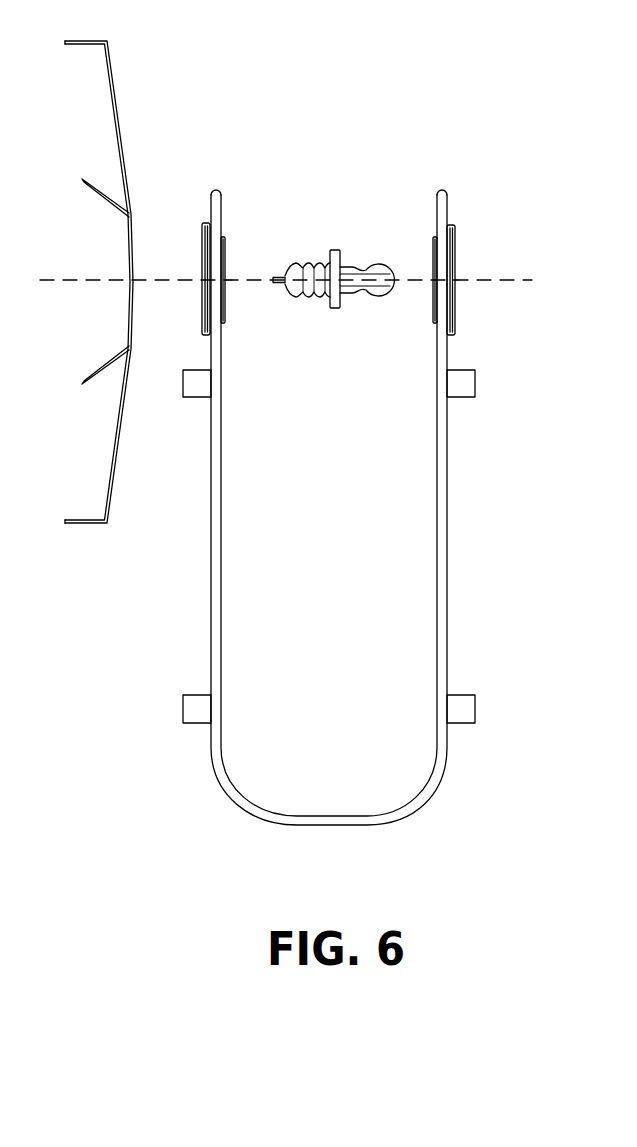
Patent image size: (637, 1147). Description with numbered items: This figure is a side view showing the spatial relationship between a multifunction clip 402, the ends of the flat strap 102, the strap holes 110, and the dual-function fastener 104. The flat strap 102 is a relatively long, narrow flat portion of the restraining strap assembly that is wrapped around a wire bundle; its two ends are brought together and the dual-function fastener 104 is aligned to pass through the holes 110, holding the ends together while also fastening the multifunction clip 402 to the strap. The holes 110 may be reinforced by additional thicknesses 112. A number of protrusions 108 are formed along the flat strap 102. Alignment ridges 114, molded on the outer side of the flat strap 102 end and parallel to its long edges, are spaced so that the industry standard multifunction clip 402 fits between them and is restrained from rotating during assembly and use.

The flat portion 102 is at (210, 647).
The dual-function fastener 104 is at (320, 240).
The protrusions 108 is at (193, 403).
The holes 110 is at (228, 284).
The reinforcement 112 is at (225, 236).
The alignment ridges 114 is at (203, 222).
The multifunction clip 402 is at (119, 70).